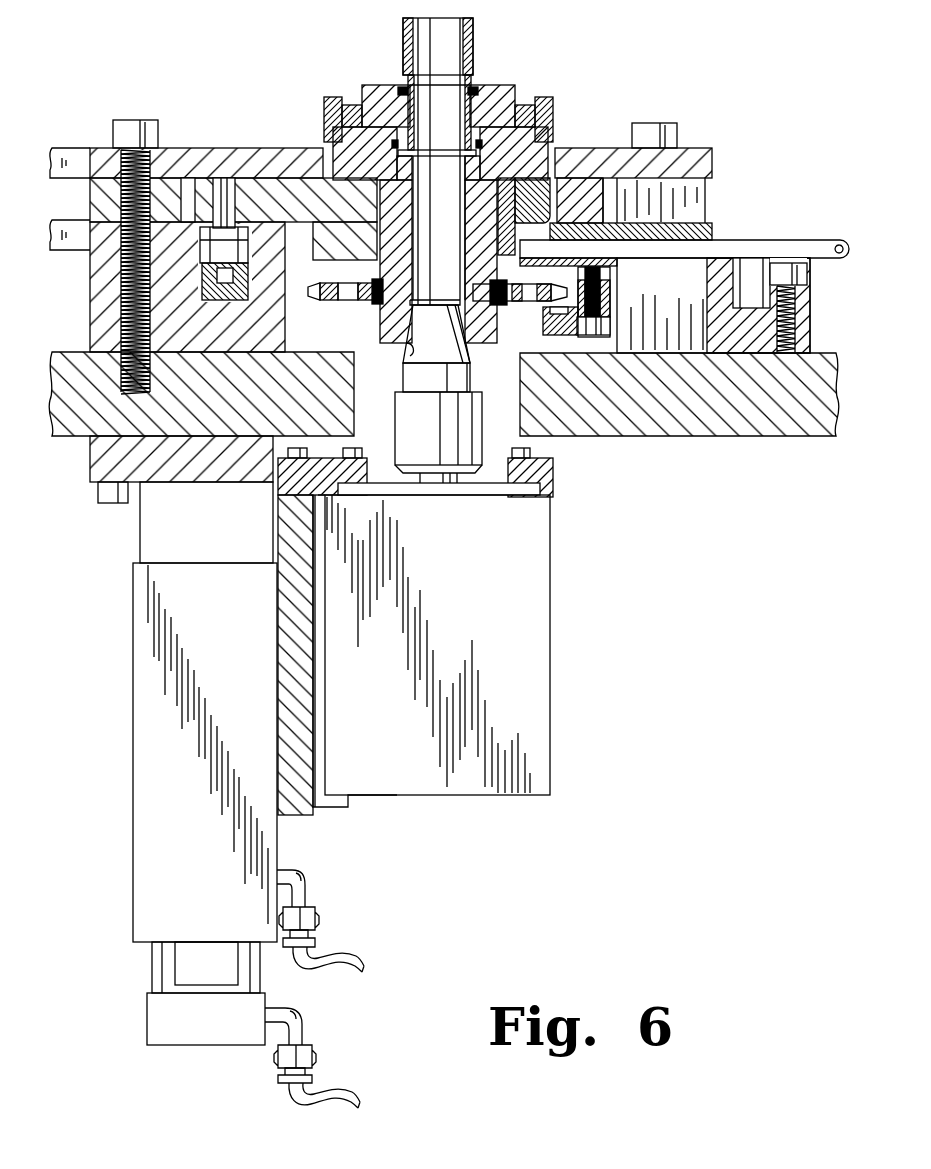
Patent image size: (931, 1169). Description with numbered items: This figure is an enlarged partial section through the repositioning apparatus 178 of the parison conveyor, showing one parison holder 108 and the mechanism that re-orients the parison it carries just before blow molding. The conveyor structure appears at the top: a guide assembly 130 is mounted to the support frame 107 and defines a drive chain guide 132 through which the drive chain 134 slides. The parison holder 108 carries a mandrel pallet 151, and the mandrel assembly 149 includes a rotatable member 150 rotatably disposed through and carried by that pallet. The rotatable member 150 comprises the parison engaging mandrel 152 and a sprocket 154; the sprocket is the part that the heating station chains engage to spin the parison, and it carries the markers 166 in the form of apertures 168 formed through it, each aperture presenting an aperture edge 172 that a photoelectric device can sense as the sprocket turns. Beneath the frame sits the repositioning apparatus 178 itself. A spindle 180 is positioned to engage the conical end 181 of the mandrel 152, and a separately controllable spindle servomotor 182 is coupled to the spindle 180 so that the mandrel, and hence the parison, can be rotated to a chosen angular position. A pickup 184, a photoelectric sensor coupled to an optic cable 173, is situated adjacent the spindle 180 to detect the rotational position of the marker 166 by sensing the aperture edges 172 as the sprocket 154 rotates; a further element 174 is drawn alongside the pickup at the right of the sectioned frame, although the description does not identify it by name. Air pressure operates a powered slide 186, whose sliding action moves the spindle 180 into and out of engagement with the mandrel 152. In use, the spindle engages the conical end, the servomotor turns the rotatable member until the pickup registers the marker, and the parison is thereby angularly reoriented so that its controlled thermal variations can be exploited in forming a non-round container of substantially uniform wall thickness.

The support frame 107 is at (55, 352).
The parison holder 108 is at (537, 88).
The guide assembly 130 is at (172, 148).
The drive chain guide 132 is at (200, 245).
The drive chain 134 is at (250, 215).
The mandrel assembly 149 is at (486, 180).
The rotatable member 150 is at (324, 97).
The mandrel pallet 151 is at (293, 188).
The parison engaging mandrel 152 is at (553, 128).
The sprocket 154 is at (330, 301).
The marker 166 is at (532, 303).
The aperture 168 is at (335, 308).
The aperture edge 172 is at (350, 301).
The optic cable 173 is at (813, 241).
The spring block 174 is at (580, 260).
The repositioning apparatus 178 is at (429, 778).
The spindle 180 is at (473, 380).
The conical end 181 is at (400, 352).
The spindle servomotor 182 is at (540, 625).
The pickup 184 is at (535, 247).
The powered slide 186 is at (134, 830).